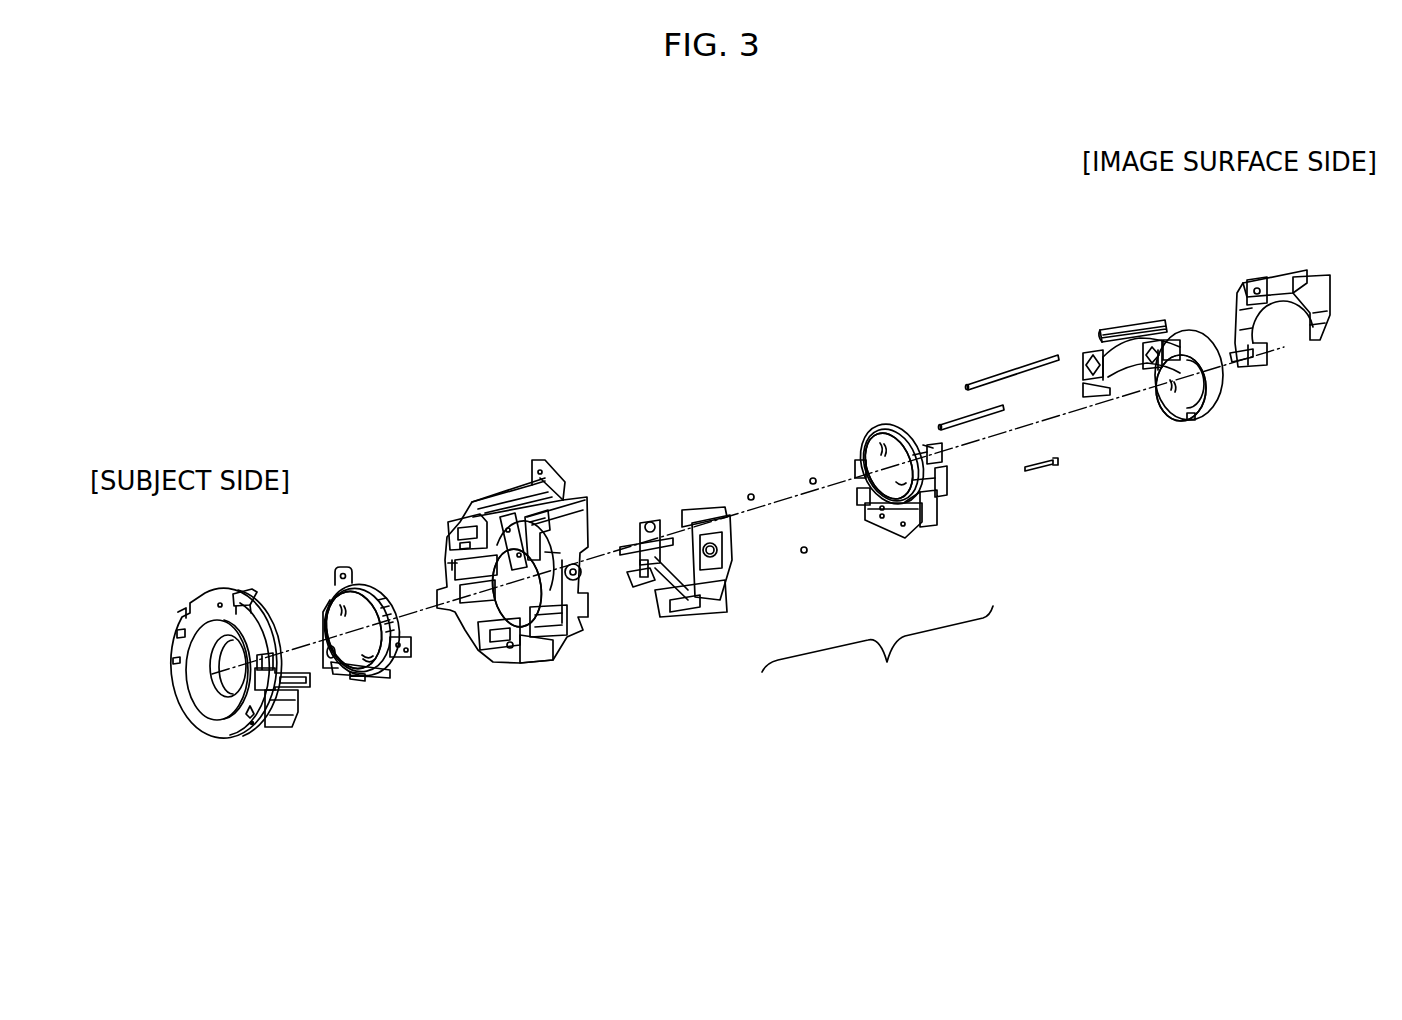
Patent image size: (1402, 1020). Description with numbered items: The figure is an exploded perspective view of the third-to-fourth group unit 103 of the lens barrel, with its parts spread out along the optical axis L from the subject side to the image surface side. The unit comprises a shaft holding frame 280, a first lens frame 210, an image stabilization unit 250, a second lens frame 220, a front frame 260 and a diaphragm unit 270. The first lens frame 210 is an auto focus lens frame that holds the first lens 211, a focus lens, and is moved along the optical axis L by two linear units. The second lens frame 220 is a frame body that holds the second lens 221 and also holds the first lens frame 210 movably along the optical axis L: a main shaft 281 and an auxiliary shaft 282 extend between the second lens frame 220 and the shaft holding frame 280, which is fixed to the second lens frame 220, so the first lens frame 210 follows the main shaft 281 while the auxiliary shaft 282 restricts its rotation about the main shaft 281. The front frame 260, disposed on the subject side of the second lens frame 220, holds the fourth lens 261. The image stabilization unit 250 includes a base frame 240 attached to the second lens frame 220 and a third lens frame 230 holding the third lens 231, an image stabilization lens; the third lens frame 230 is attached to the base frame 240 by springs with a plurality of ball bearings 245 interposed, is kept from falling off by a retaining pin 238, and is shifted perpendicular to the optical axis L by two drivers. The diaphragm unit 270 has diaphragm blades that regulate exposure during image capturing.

The third-to-fourth group unit 103 is at (428, 340).
The optical axis L is at (1073, 410).
The first lens frame 210 is at (1217, 405).
The first lens 211 is at (1177, 417).
The second lens frame 220 is at (558, 632).
The second lens 221 is at (502, 567).
The third lens frame 230 is at (907, 540).
The third lens 231 is at (878, 452).
The retaining pin 238 is at (1043, 473).
The base frame 240 is at (723, 590).
The ball bearings 245 is at (808, 554).
The image stabilization unit 250 is at (877, 652).
The front frame 260 is at (375, 678).
The fourth lens 261 is at (325, 612).
The diaphragm unit 270 is at (255, 745).
The shaft holding frame 280 is at (1265, 277).
The main shaft 281 is at (1030, 360).
The auxiliary shaft 282 is at (957, 421).